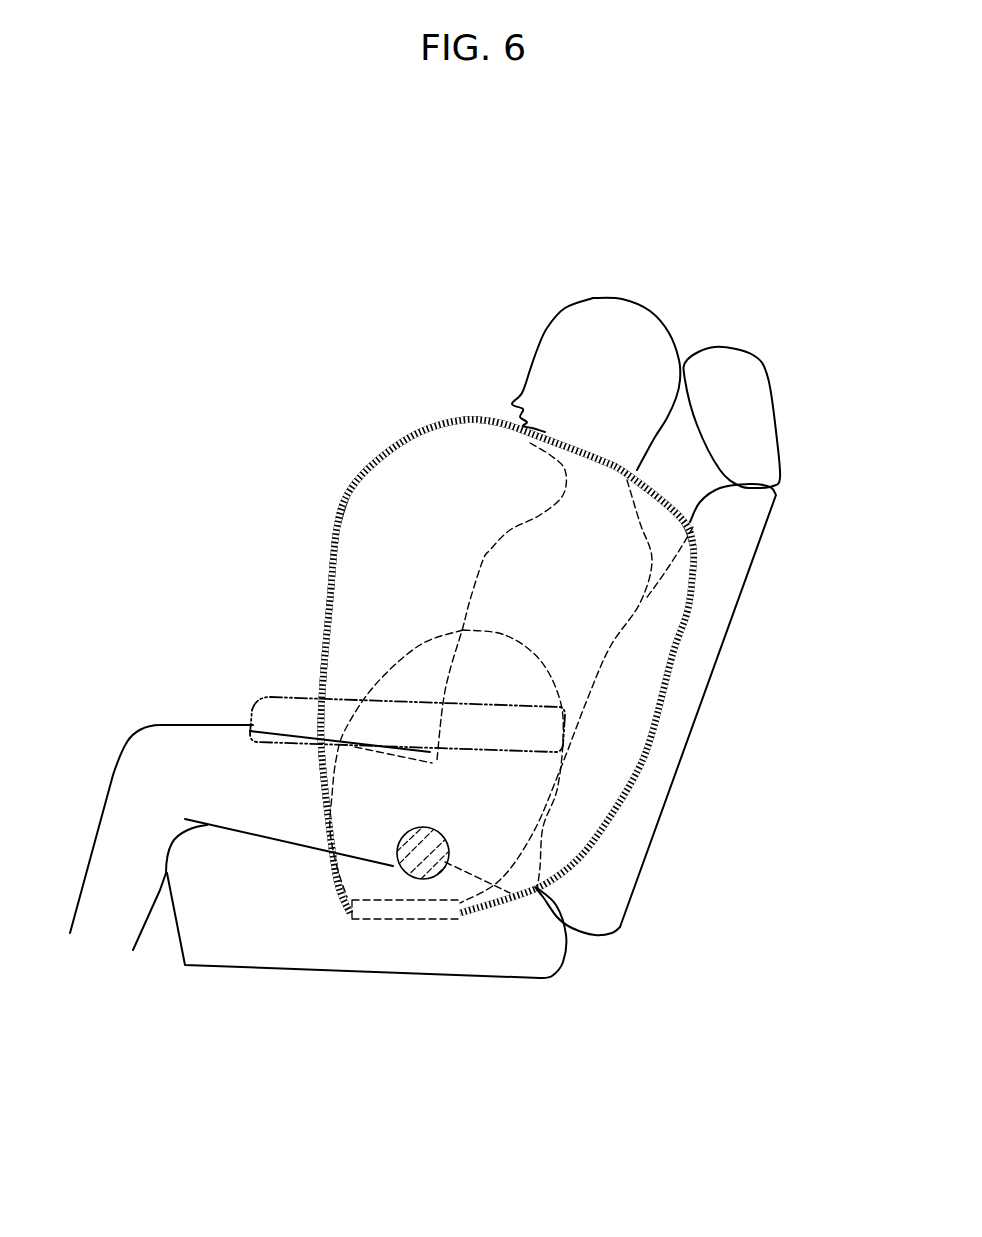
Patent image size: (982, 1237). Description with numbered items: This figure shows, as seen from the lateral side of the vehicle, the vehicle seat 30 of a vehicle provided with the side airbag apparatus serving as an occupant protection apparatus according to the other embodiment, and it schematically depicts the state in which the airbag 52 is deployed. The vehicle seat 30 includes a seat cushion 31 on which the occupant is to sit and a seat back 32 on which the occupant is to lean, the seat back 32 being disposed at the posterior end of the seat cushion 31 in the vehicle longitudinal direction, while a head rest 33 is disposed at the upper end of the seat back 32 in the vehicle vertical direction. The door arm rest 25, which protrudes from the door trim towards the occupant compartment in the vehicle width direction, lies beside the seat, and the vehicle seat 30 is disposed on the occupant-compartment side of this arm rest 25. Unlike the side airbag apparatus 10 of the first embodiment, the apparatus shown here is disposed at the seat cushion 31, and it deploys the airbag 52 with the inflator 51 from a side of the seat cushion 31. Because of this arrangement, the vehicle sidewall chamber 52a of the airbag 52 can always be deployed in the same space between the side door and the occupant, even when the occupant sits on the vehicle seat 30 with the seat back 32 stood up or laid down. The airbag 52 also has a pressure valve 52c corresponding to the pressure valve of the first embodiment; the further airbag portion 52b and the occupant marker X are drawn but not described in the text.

The side airbag apparatus 10 is at (479, 606).
The airbag 52 is at (479, 588).
The vehicle sidewall chamber 52a is at (425, 450).
The lower inflation portion of airbag 52b is at (437, 677).
The pressure valve 52c is at (397, 840).
The inflator 51 is at (420, 919).
The arm rest 25 is at (293, 710).
The vehicle seat 30 is at (533, 662).
The seat cushion 31 is at (503, 945).
The seat back 32 is at (727, 575).
The head rest 33 is at (745, 432).
The occupant X is at (638, 303).